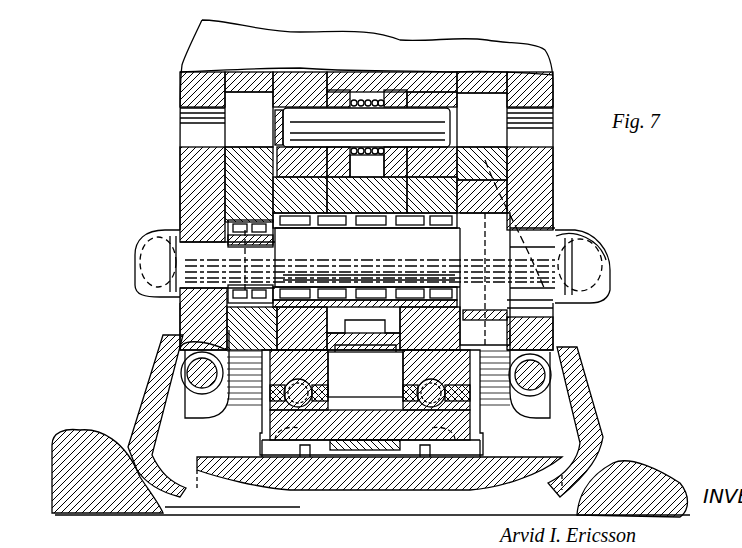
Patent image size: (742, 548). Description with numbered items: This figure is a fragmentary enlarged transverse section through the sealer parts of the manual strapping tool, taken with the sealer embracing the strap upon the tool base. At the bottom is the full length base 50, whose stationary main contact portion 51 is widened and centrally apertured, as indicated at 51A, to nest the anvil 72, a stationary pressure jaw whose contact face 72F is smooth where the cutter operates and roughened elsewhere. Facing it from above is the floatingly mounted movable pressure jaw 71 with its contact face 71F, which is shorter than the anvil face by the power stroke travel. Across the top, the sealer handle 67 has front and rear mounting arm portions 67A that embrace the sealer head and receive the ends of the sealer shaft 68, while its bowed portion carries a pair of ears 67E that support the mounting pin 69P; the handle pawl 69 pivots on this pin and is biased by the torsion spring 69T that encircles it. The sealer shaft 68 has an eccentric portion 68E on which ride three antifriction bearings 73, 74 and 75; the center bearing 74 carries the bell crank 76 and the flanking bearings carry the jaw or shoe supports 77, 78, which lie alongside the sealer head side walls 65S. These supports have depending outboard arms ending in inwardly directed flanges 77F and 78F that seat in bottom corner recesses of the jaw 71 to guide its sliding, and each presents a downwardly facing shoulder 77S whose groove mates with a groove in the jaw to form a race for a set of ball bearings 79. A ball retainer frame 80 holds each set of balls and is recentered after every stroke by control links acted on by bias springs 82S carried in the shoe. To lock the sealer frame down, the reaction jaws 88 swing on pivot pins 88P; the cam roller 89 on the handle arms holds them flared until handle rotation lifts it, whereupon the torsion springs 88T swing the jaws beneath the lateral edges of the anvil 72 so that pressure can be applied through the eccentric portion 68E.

The sealer handle 67 is at (487, 45).
The ears 67E is at (277, 160).
The mounting arm portions 67A is at (195, 192).
The sealer head side walls 65S is at (235, 165).
The mounting pin 69P is at (302, 118).
The torsion spring 69T is at (366, 96).
The handle pawl 69 is at (390, 97).
The antifriction bearing 73 is at (283, 212).
The center bearing 74 is at (376, 220).
The antifriction bearing 75 is at (445, 212).
The eccentric portion 68E is at (392, 259).
The bell crank 76 is at (373, 307).
The sealer shaft 68 is at (160, 232).
The cam roller 89 is at (135, 255).
The jaw or shoe support 77 is at (283, 347).
The jaw or shoe support 78 is at (423, 348).
The bias springs 82S is at (262, 445).
The downwardly facing shoulder 77S is at (287, 380).
The ball retainer frame 80 is at (317, 405).
The ball bearings 79 is at (370, 393).
The movable pressure jaw 71 is at (379, 473).
The contact face 71F is at (302, 464).
The anvil 72 is at (461, 461).
The contact face 72F is at (418, 465).
The inwardly directed flange 77F is at (262, 480).
The inwardly directed flange 78F is at (475, 482).
The base 50 is at (268, 515).
The aperture 51A is at (211, 514).
The main contact portion 51 is at (63, 468).
The reaction jaws 88 is at (145, 425).
The torsion springs 88T is at (183, 394).
The pivot pins 88P is at (195, 372).